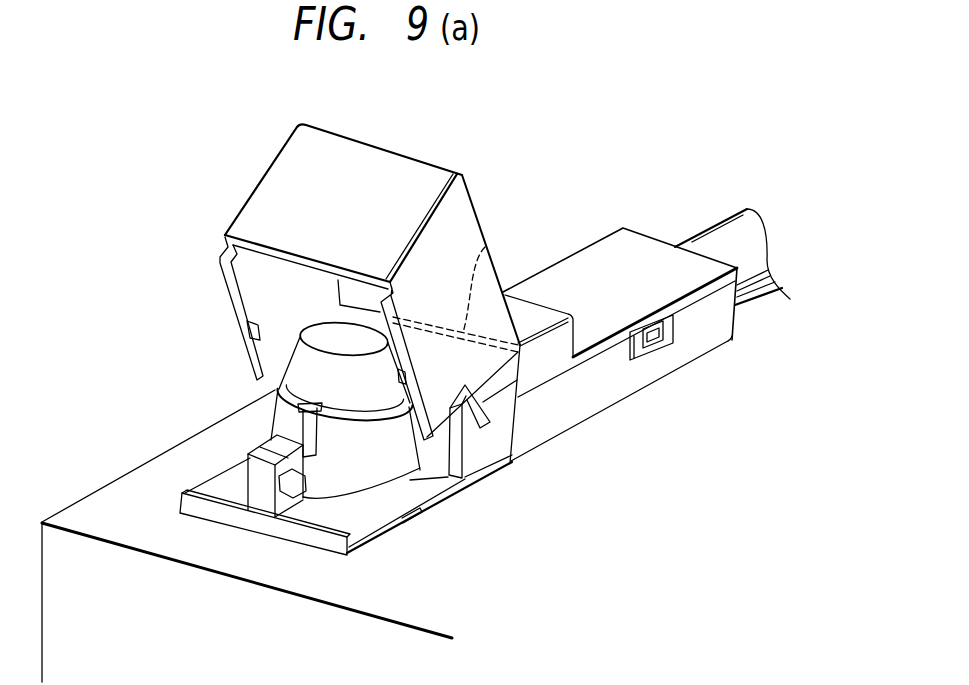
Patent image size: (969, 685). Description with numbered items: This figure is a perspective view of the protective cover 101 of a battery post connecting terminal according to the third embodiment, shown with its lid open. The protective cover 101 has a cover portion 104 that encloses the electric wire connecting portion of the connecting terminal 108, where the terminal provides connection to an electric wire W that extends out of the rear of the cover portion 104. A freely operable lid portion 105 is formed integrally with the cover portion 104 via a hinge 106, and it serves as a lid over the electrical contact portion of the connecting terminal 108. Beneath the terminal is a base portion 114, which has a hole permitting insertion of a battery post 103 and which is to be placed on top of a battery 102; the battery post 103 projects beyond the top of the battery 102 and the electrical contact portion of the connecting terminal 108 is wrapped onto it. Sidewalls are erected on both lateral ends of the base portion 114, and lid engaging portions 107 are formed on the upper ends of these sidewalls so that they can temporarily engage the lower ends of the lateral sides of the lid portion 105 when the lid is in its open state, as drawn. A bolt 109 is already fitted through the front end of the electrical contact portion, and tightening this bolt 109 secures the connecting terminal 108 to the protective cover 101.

The protective cover 101 is at (437, 138).
The battery 102 is at (167, 463).
The battery post 103 is at (313, 363).
The cover portion 104 is at (634, 247).
The lid portion 105 is at (290, 162).
The hinge 106 is at (485, 247).
The lid engaging portion 107 is at (475, 422).
The connecting terminal 108 is at (376, 497).
The bolt 109 is at (293, 498).
The base portion 114 is at (423, 490).
The electric wire W is at (756, 302).